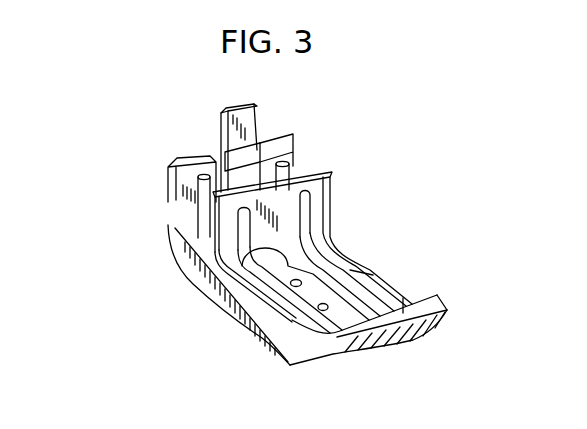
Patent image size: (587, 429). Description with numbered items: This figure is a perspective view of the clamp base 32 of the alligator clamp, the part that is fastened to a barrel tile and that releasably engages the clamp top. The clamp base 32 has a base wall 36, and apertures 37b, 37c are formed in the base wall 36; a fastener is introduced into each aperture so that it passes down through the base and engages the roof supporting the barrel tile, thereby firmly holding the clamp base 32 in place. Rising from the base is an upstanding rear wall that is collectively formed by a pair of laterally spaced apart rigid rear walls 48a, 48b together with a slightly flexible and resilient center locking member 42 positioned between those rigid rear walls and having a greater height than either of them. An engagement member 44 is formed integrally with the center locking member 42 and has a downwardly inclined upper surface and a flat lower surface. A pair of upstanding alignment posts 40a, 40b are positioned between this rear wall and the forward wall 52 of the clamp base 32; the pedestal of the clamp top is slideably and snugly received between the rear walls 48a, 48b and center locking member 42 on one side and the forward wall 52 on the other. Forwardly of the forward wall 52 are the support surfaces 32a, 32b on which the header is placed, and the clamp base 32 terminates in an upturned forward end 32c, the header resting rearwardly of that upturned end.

The clamp base 32 is at (409, 236).
The support surface 32a is at (262, 280).
The support surface 32b is at (336, 265).
The upturned forward end 32c is at (447, 313).
The base wall 36 is at (217, 290).
The aperture 37b is at (375, 279).
The aperture 37c is at (334, 317).
The alignment post 40a is at (176, 184).
The alignment post 40b is at (285, 161).
The center locking member 42 is at (234, 103).
The engagement member 44 is at (250, 157).
The rigid rear wall 48a is at (175, 200).
The rigid rear wall 48b is at (275, 144).
The forward wall 52 is at (335, 192).